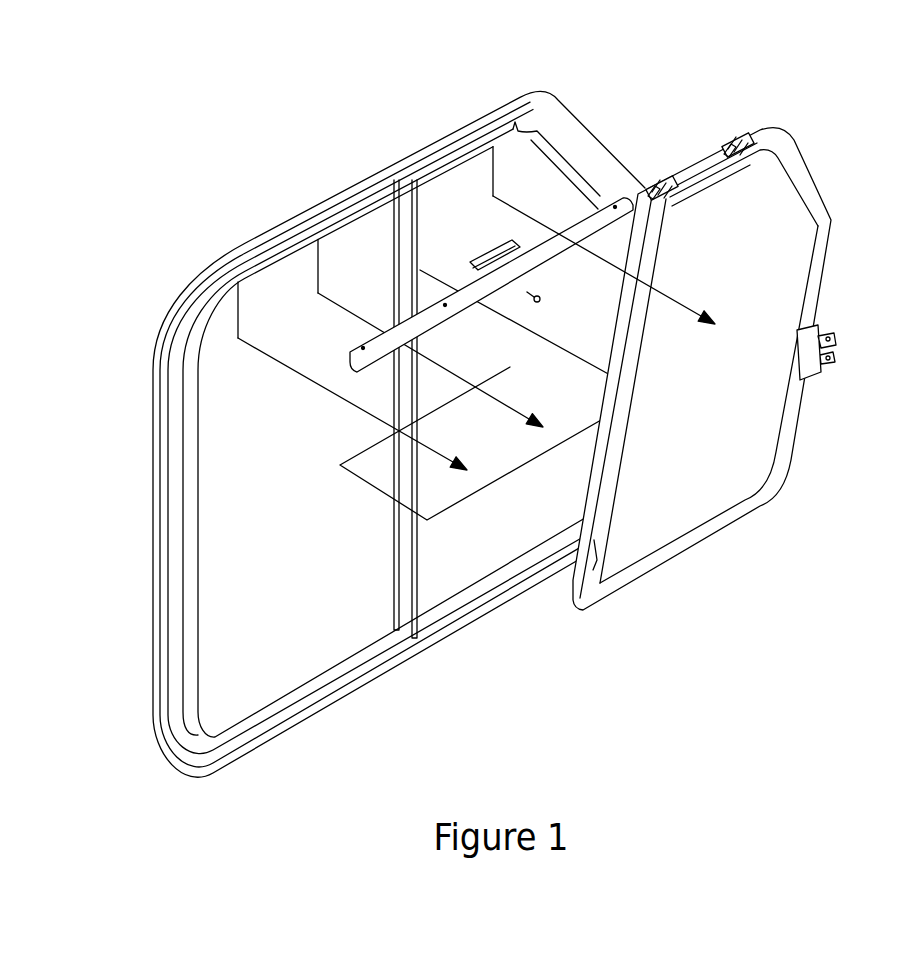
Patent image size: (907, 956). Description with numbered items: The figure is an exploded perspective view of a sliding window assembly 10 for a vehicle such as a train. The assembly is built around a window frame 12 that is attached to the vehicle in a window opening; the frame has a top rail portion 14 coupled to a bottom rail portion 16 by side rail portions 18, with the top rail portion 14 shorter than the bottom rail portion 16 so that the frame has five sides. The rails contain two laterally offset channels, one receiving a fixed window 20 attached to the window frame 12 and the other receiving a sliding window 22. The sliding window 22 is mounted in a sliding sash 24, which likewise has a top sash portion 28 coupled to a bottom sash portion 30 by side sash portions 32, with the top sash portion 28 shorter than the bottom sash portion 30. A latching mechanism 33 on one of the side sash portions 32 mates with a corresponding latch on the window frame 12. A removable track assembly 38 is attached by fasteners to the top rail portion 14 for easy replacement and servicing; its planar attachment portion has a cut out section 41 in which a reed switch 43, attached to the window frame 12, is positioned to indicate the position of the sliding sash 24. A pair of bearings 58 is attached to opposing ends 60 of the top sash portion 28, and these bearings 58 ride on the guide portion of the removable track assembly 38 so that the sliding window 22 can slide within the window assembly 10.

The sliding window assembly 10 is at (363, 102).
The window frame 12 is at (258, 247).
The top rail portion 14 is at (410, 151).
The bottom rail portion 16 is at (430, 652).
The side rail portions 18 is at (177, 513).
The fixed window 20 is at (277, 660).
The sliding window 22 is at (733, 487).
The sliding sash 24 is at (788, 147).
The top sash portion 28 is at (760, 130).
The bottom sash portion 30 is at (663, 563).
The side sash portions 32 is at (827, 264).
The latching mechanism 33 is at (826, 336).
The removable track assembly 38 is at (385, 368).
The cut out section 41 is at (552, 252).
The reed switch 43 is at (478, 260).
The bearings 58 is at (660, 188).
The opposing ends 60 is at (644, 187).